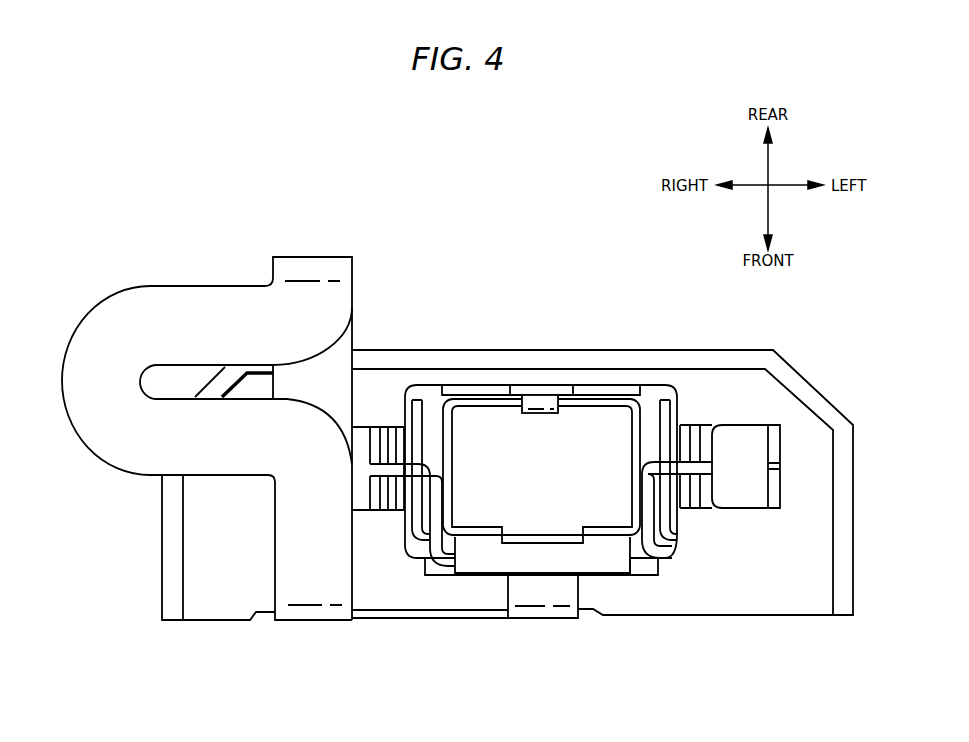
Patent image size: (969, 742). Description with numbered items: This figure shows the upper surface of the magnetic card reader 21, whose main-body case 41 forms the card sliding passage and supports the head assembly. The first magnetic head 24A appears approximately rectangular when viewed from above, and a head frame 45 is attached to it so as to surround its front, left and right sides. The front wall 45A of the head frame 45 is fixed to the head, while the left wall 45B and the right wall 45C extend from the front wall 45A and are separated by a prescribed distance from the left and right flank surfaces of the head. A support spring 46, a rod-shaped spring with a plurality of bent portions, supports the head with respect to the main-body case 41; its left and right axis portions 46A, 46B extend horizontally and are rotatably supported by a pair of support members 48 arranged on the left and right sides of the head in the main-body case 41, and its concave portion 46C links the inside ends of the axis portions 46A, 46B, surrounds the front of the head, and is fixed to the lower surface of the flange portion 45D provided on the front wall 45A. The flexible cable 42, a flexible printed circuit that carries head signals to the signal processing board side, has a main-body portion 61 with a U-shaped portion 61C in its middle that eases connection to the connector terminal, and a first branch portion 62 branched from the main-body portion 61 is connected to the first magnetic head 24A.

The magnetic card reader 21 is at (528, 252).
The first magnetic head 24A is at (588, 420).
The main-body case 41 is at (813, 440).
The flexible cable 42 is at (86, 471).
The head frame 45 is at (677, 558).
The front wall 45A is at (638, 546).
The left wall 45B is at (663, 398).
The right wall 45C is at (418, 398).
The flange portion 45D is at (590, 558).
The support spring 46 is at (424, 518).
The left axis portion 46A is at (683, 462).
The right axis portion 46B is at (399, 466).
The concave portion 46C is at (447, 562).
The support members 48 is at (358, 445).
The main-body portion 61 is at (294, 251).
The U-shaped portion 61C is at (102, 340).
The first branch portion 62 is at (537, 614).